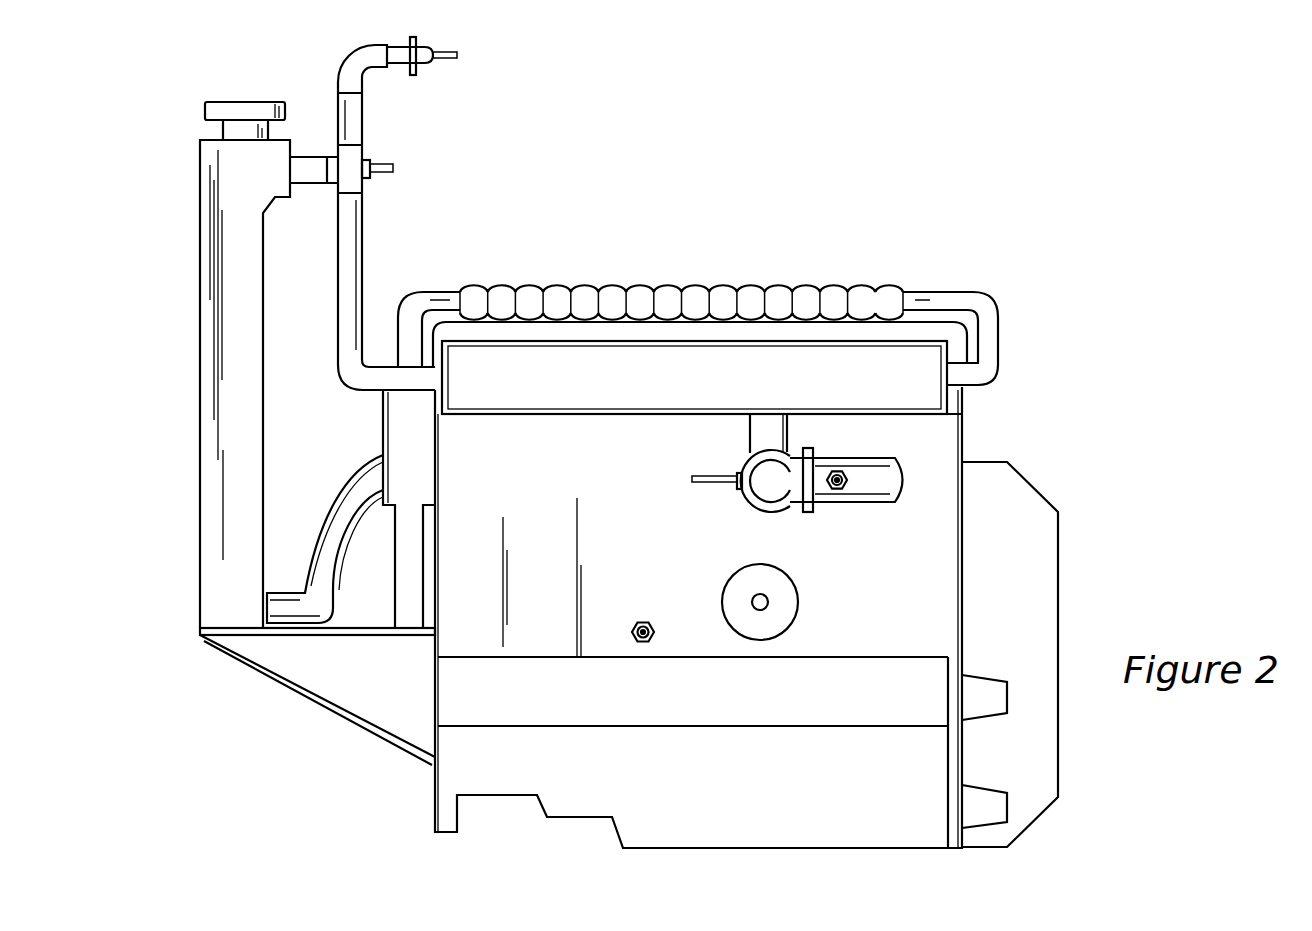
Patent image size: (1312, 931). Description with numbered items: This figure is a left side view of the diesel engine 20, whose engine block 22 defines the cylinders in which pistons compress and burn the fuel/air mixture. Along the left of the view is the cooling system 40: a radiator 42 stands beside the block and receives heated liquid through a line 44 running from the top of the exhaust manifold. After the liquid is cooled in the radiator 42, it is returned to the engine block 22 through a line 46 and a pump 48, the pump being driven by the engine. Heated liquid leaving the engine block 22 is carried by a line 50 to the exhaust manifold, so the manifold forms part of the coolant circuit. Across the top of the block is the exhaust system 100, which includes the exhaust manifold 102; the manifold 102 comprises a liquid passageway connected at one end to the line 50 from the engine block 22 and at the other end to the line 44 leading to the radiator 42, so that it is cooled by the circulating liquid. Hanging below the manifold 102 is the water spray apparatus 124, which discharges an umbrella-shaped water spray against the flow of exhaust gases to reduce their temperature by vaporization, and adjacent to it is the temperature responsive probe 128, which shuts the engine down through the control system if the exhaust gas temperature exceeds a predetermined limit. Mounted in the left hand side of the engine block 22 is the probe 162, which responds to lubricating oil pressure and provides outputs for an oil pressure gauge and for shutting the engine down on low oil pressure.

The diesel engine 20 is at (845, 271).
The engine block 22 is at (549, 534).
The cooling system 40 is at (196, 389).
The radiator 42 is at (230, 540).
The line 44 is at (355, 253).
The line 46 is at (338, 508).
The pump 48 is at (407, 427).
The line 50 is at (518, 300).
The exhaust system 100 is at (667, 338).
The exhaust manifold 102 is at (527, 395).
The water spray apparatus 124 is at (738, 470).
The temperature responsive probe 128 is at (838, 491).
The probe 162 is at (633, 623).